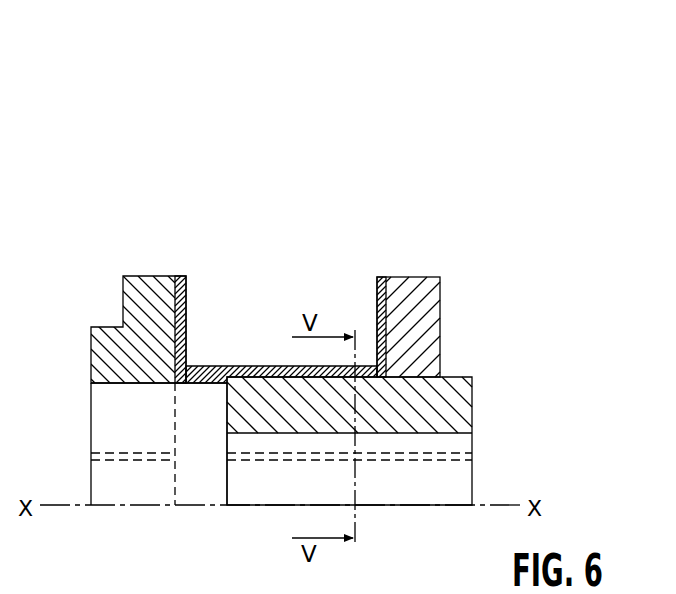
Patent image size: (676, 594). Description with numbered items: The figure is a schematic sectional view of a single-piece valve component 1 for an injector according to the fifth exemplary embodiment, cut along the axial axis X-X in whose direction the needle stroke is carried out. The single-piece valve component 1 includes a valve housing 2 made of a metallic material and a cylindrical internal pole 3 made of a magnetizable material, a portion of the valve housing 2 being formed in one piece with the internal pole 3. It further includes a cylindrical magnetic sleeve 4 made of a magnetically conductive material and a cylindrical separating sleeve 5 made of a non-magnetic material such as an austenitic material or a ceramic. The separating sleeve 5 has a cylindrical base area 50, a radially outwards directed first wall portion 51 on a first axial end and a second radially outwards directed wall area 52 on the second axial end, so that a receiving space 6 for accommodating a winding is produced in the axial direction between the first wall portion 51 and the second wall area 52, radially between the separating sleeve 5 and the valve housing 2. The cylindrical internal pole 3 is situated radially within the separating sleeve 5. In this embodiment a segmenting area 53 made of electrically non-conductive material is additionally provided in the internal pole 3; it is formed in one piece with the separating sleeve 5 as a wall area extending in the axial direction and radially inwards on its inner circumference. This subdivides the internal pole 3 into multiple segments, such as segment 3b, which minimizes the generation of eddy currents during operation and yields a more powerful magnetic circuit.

The single-piece valve component 1 is at (125, 128).
The valve housing 2 is at (413, 319).
The cylindrical internal pole 3 is at (349, 480).
The segment of the internal pole 3b is at (425, 413).
The cylindrical magnetic sleeve 4 is at (152, 305).
The cylindrical separating sleeve 5 is at (266, 366).
The receiving space 6 is at (240, 350).
The base area 50 is at (206, 366).
The first wall portion 51 is at (180, 318).
The second wall area 52 is at (377, 318).
The segmenting area 53 is at (250, 457).